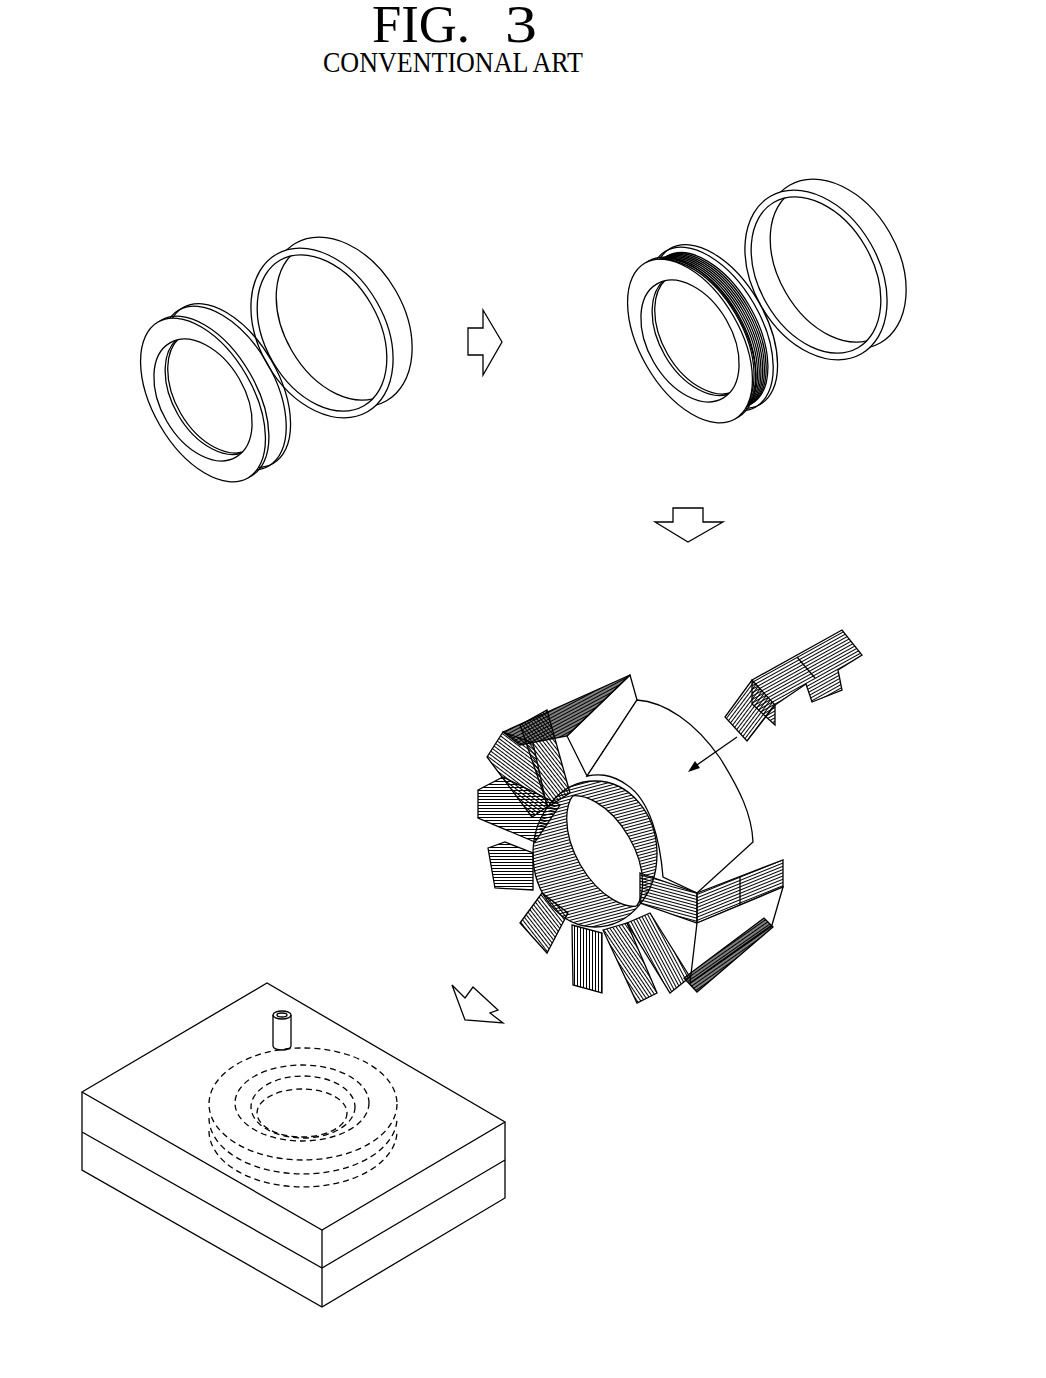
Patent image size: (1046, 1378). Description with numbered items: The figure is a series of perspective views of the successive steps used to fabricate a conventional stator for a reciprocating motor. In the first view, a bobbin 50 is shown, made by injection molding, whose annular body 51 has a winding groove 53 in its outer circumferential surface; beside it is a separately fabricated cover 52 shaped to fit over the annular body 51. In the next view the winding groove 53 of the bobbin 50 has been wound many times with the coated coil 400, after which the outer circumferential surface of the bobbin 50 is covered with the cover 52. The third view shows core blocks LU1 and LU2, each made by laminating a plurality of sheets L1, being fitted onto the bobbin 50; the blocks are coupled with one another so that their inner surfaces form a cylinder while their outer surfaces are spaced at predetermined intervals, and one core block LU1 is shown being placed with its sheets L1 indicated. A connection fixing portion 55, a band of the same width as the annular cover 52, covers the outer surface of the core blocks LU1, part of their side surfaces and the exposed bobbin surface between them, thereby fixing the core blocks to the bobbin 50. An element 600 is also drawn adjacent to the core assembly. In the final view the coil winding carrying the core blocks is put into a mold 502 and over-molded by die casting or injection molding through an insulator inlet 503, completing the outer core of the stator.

The bobbin 50 is at (130, 340).
The annular body 51 is at (162, 330).
The cover 52 is at (313, 243).
The winding groove 53 is at (228, 333).
The coated coil 400 is at (767, 365).
The connection fixing portion 55 is at (598, 673).
The core block LU1 is at (808, 626).
The core block LU2 is at (480, 738).
The sheet L1 is at (744, 690).
The base core 600 is at (792, 923).
The mold 502 is at (155, 1033).
The insulator inlet 503 is at (273, 1027).